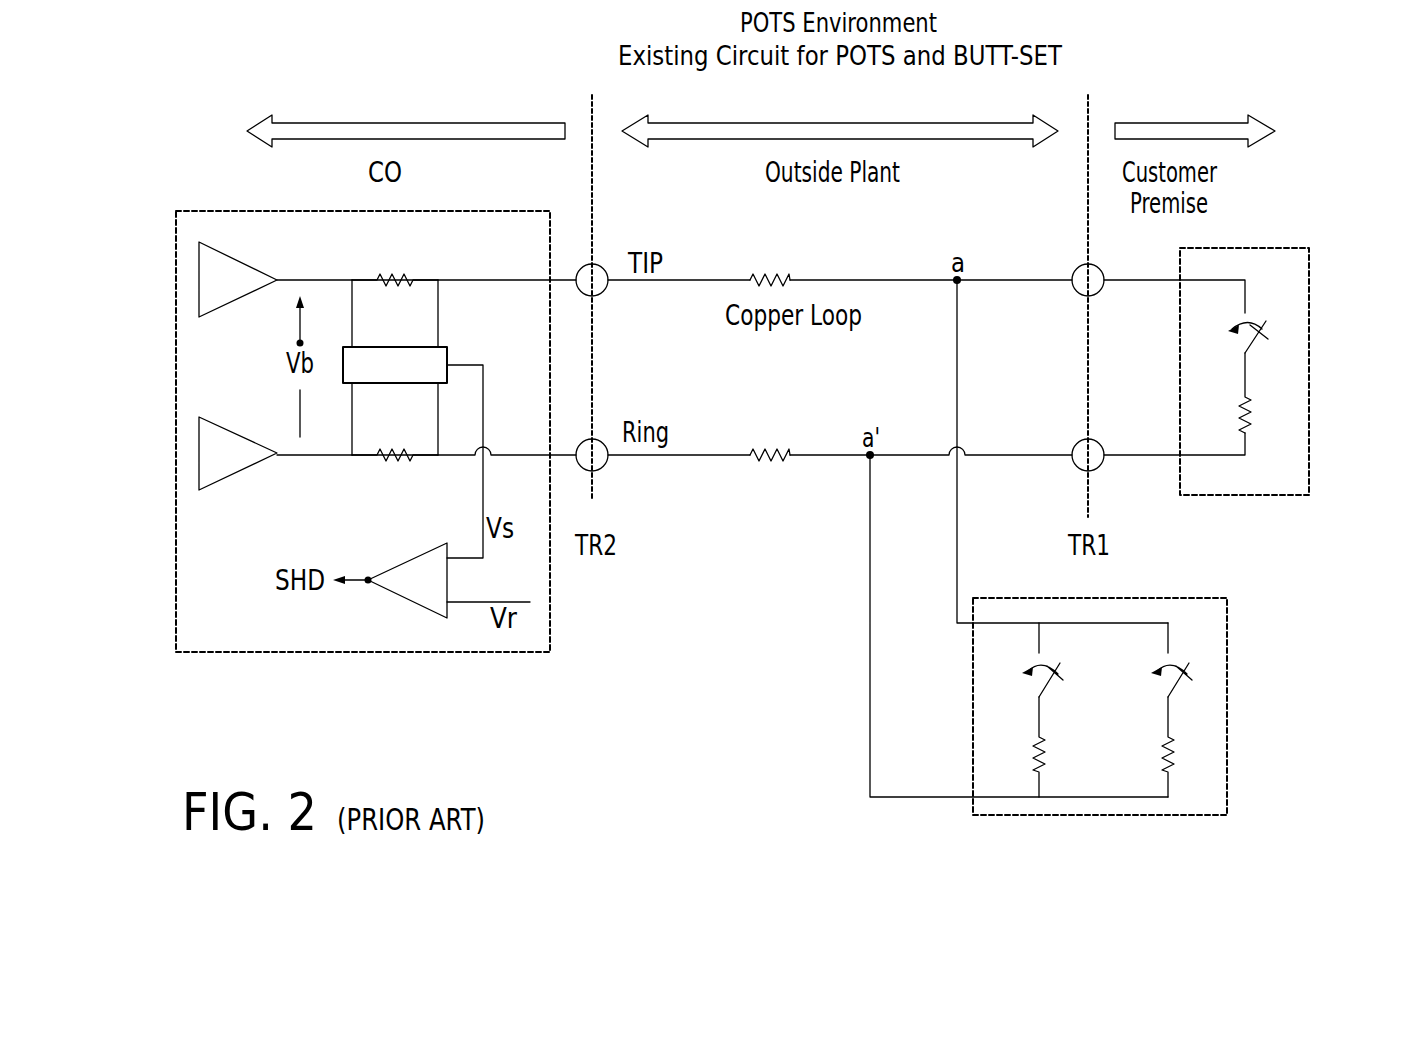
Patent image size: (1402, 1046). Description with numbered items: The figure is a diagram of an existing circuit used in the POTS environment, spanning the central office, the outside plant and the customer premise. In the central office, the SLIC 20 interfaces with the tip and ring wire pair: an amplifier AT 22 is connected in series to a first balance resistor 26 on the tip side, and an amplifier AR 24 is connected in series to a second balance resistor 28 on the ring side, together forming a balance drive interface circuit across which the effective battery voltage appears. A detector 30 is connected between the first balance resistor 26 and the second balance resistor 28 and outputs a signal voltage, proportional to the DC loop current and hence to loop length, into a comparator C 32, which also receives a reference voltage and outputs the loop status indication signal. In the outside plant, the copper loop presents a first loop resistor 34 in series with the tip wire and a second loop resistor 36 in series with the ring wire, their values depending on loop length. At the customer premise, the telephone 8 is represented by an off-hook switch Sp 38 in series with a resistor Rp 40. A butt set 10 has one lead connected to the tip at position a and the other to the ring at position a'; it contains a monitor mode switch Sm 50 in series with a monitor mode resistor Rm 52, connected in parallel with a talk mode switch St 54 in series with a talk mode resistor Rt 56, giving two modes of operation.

The telephone 8 is at (1328, 510).
The butt set 10 is at (1249, 672).
The SLIC 20 is at (390, 670).
The amplifier AT 22 is at (250, 296).
The amplifier AR 24 is at (250, 437).
The resistor Rb1 26 is at (386, 276).
The resistor Rb2 28 is at (386, 450).
The detector 30 is at (447, 356).
The comparator C 32 is at (390, 568).
The resistor Rl1 34 is at (790, 280).
The resistor Rl2 36 is at (762, 450).
The off-hook switch Sp 38 is at (1250, 350).
The resistor Rp 40 is at (1240, 416).
The monitor mode switch Sm 50 is at (1044, 690).
The monitor mode resistor Rm 52 is at (1035, 754).
The talk mode switch St 54 is at (1172, 690).
The talk mode resistor Rt 56 is at (1165, 754).